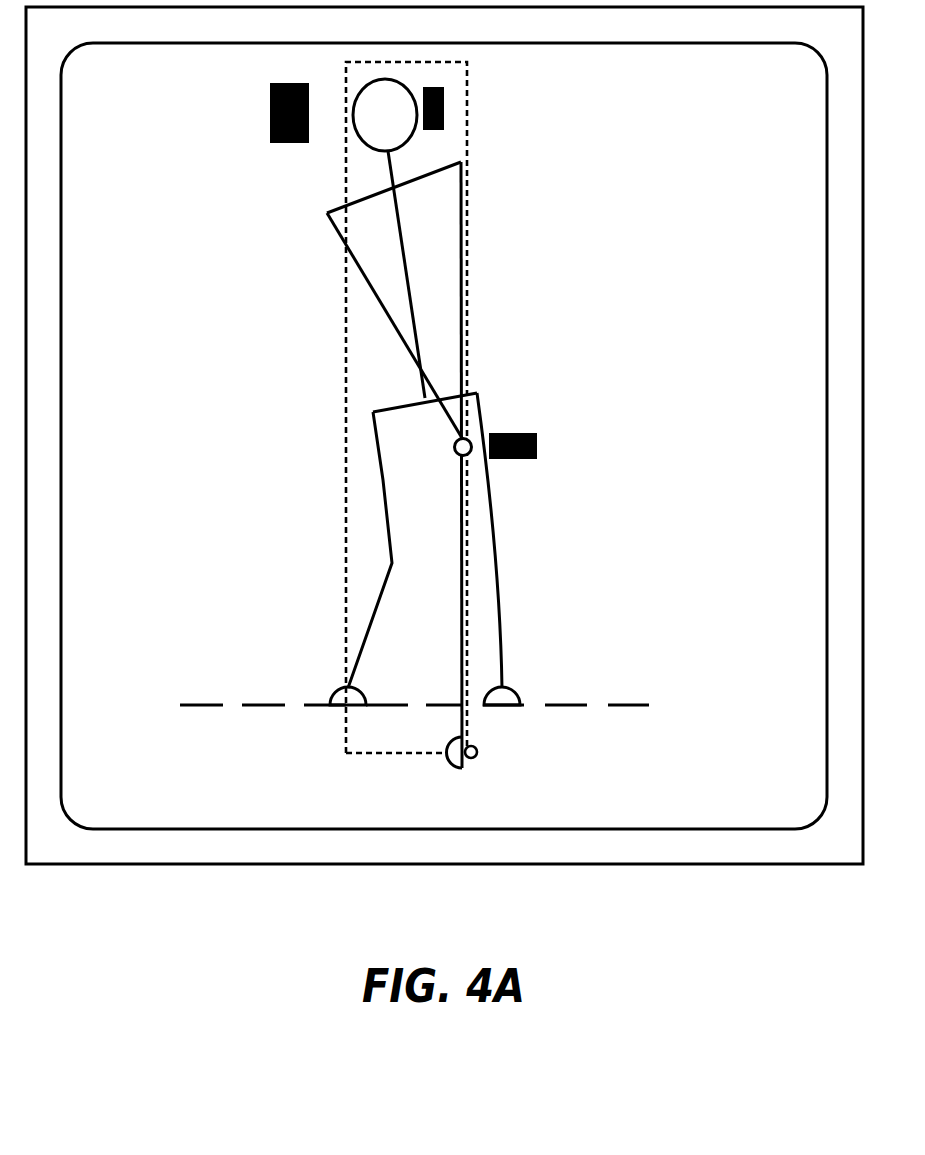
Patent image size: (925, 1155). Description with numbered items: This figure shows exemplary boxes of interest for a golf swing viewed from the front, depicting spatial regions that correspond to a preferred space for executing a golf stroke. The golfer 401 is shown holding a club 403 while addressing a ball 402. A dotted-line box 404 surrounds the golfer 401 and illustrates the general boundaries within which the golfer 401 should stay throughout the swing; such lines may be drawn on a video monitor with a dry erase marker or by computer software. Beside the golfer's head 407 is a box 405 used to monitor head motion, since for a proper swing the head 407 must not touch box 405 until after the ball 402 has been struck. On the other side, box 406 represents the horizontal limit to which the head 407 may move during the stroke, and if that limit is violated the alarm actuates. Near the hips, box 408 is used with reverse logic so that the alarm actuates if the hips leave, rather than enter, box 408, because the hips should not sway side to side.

The golfer 401 is at (410, 276).
The ball 402 is at (477, 752).
The club 403 is at (461, 643).
The detection region 404 is at (344, 413).
The box 405 is at (444, 115).
The box 406 is at (270, 110).
The head 407 is at (368, 148).
The box 408 is at (537, 446).